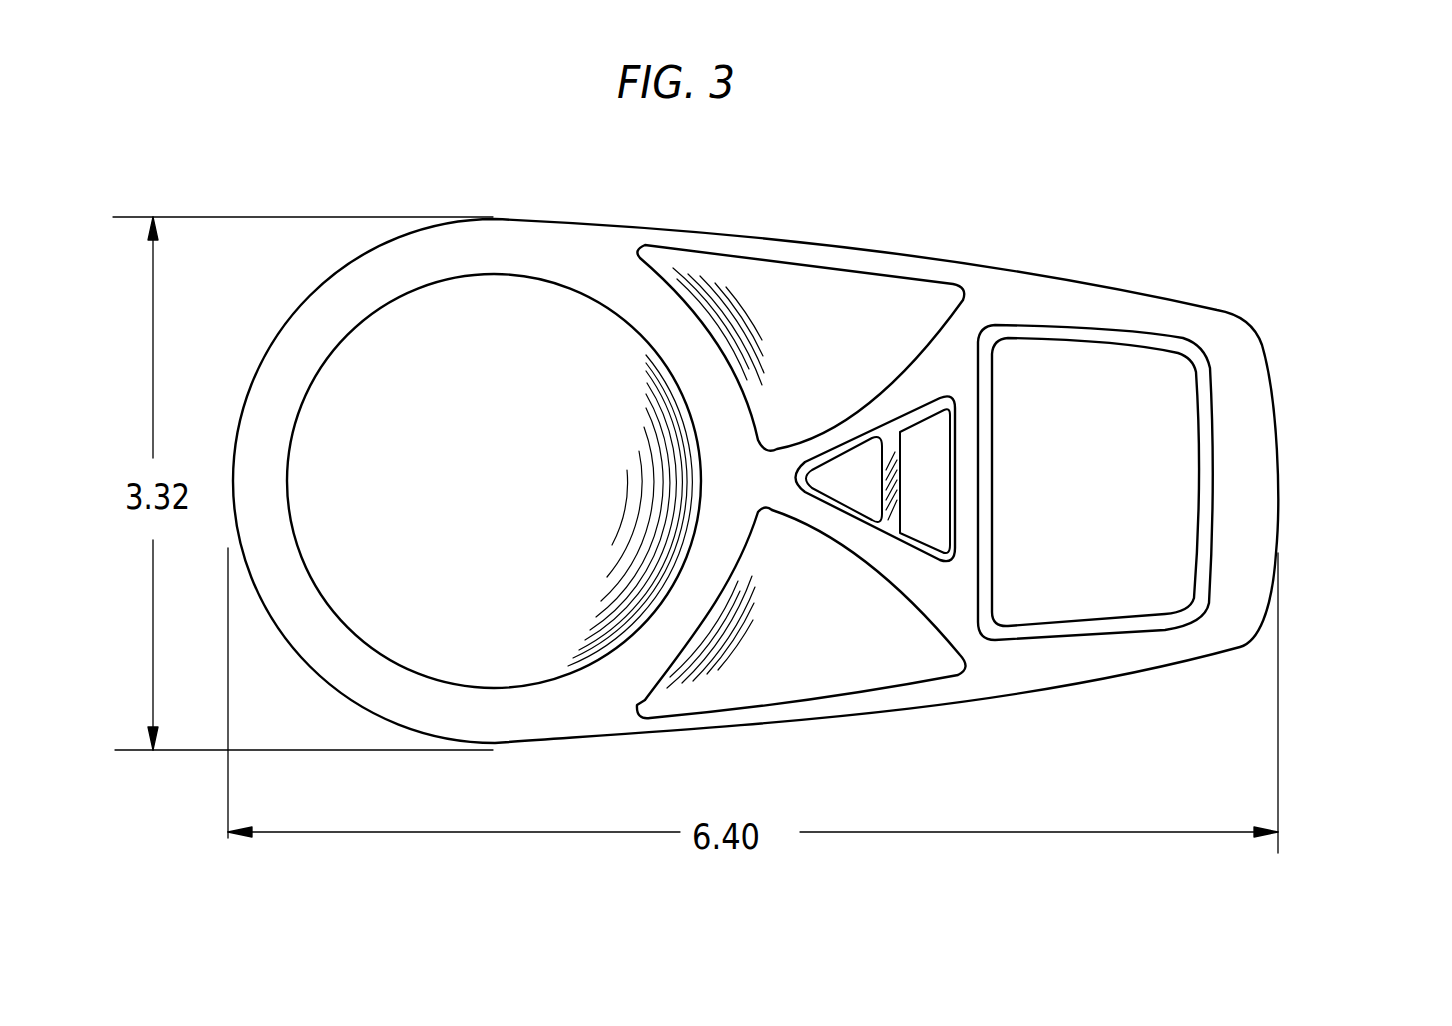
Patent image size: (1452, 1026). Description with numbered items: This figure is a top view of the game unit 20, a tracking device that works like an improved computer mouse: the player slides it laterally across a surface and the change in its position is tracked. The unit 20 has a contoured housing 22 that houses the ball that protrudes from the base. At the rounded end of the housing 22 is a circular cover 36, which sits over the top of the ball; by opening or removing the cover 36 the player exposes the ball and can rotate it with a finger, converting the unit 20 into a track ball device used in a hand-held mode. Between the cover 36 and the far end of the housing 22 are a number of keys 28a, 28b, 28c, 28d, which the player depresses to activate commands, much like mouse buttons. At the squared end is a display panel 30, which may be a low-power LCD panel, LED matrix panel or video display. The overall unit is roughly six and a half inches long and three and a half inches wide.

The game unit 20 is at (1297, 472).
The housing 22 is at (1135, 645).
The key 28a is at (768, 280).
The key 28b is at (868, 676).
The key 28c is at (847, 483).
The key 28d is at (933, 533).
The display panel 30 is at (1158, 430).
The cover 36 is at (453, 662).